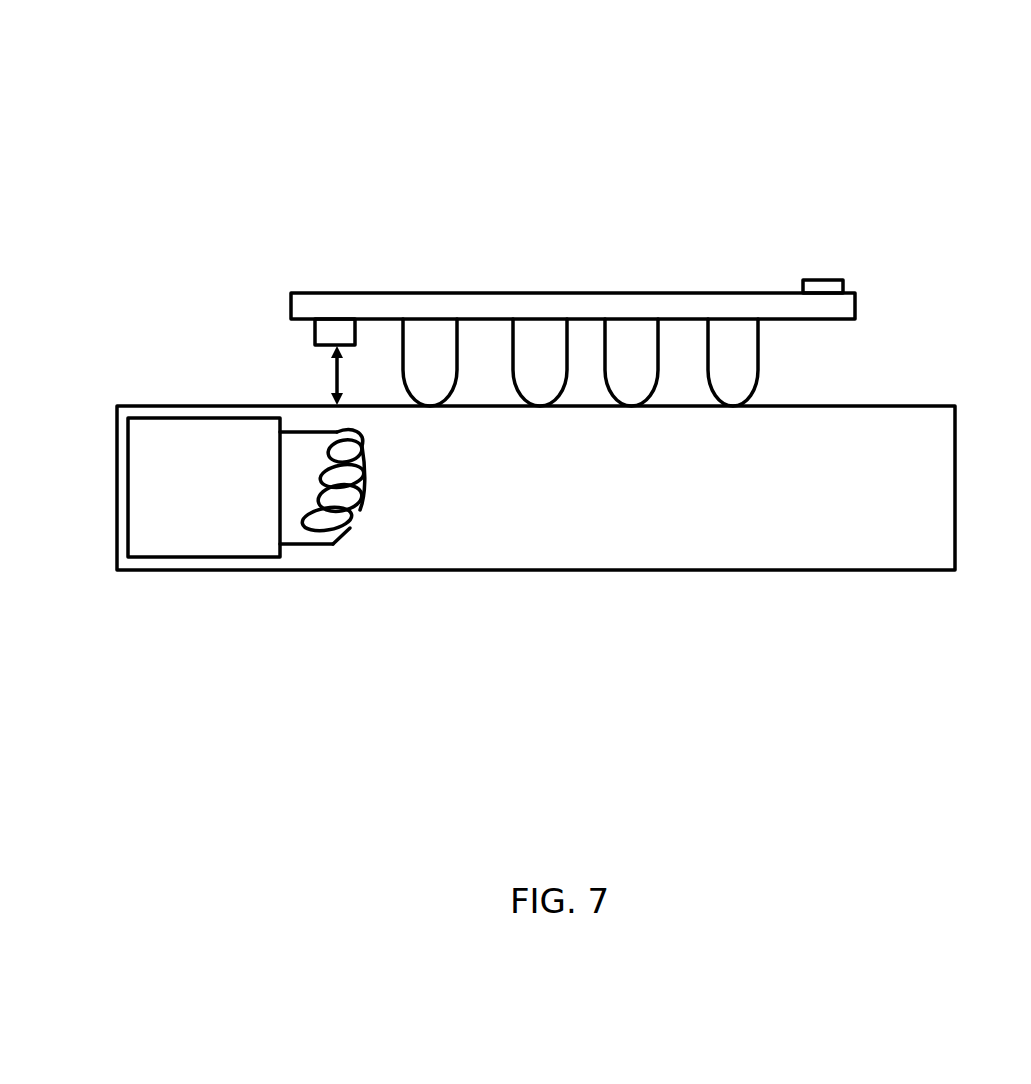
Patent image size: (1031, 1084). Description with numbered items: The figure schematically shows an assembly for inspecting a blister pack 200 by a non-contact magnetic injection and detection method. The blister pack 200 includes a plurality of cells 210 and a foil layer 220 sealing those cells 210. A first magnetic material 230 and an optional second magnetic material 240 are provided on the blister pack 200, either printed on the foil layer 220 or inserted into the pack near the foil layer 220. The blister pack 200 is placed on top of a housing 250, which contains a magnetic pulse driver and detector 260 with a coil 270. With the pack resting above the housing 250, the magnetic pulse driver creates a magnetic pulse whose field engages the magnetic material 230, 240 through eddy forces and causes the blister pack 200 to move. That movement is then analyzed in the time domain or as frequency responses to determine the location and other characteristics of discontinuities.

The blister pack 200 is at (186, 201).
The cells 210 is at (742, 357).
The foil layer 220 is at (385, 297).
The first magnetic material 230 is at (318, 334).
The second magnetic material 240 is at (823, 280).
The housing 250 is at (773, 538).
The magnetic pulse driver and detector 260 is at (218, 503).
The coil 270 is at (362, 512).